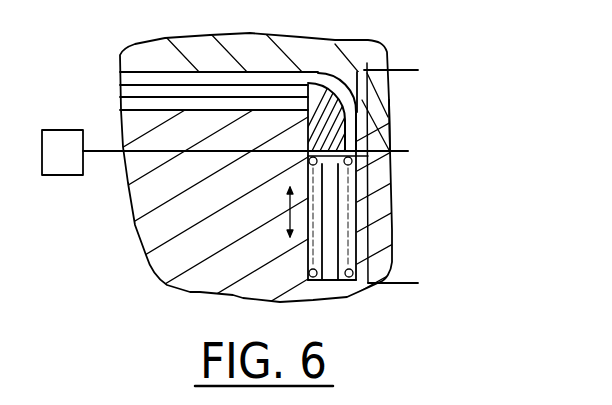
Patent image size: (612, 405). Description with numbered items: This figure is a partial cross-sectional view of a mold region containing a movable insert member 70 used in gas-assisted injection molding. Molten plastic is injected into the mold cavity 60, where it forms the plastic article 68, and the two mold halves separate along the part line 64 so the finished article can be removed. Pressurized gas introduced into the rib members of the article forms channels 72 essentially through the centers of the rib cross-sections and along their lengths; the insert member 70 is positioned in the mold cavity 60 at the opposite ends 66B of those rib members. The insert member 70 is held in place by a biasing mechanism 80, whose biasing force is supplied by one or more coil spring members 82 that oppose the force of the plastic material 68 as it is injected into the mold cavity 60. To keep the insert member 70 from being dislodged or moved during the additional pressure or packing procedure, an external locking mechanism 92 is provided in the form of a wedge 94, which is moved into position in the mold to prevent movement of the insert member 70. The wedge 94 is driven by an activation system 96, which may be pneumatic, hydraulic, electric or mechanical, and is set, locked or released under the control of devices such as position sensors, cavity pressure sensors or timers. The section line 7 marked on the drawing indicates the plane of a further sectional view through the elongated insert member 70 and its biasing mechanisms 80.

The mold cavity 60 is at (150, 76).
The channels 72 is at (198, 87).
The plastic article 68 is at (257, 72).
The opposite ends of rib members 66B is at (122, 103).
The insert member 70 is at (311, 117).
The part line 64 is at (387, 135).
The wedge 94 is at (263, 162).
The biasing mechanism 80 is at (353, 202).
The coil spring members 82 is at (333, 282).
The activation system 96 is at (60, 177).
The external locking mechanism 92 is at (68, 217).
The section line 7- 7 is at (404, 177).